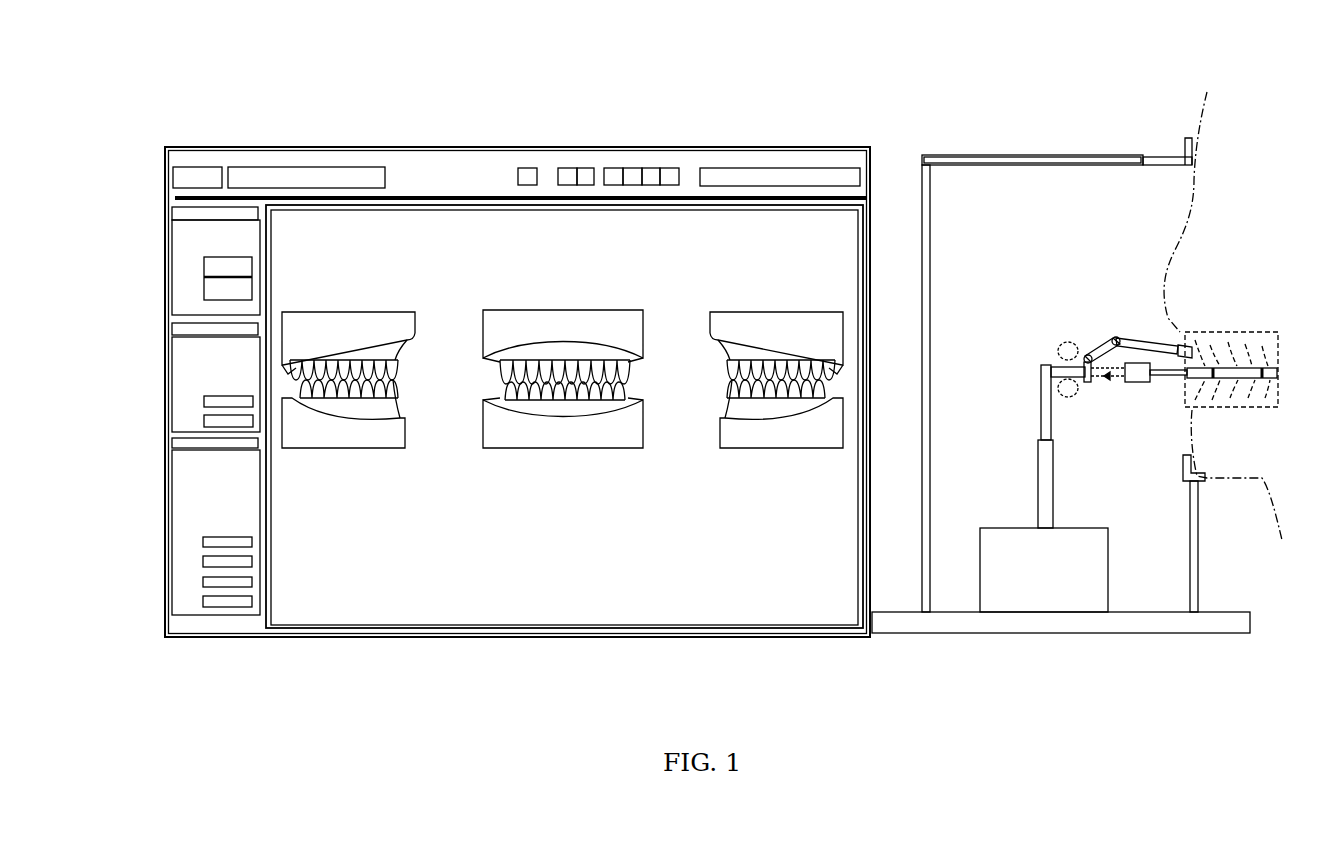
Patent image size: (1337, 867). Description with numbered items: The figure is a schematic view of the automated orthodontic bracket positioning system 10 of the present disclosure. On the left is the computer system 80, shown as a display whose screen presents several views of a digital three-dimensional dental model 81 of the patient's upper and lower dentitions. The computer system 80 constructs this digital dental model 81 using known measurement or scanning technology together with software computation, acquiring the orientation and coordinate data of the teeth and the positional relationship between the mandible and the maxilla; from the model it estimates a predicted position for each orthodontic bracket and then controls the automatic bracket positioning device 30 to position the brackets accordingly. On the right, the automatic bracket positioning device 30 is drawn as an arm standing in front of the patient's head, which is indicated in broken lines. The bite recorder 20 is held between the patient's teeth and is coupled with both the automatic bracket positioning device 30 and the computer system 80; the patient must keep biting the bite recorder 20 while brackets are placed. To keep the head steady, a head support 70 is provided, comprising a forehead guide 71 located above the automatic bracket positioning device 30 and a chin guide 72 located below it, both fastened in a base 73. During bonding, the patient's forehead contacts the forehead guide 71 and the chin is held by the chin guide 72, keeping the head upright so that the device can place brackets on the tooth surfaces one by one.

The automated orthodontic bracket positioning system 10 is at (1265, 73).
The computer system 80 is at (406, 147).
The digital 3D dental model 81 is at (362, 308).
The head support 70 is at (996, 147).
The forehead guide 71 is at (1178, 155).
The chin guide 72 is at (1183, 470).
The base 73 is at (1150, 610).
The automatic bracket positioning device 30 is at (1098, 320).
The bite recorder 20 is at (1240, 365).